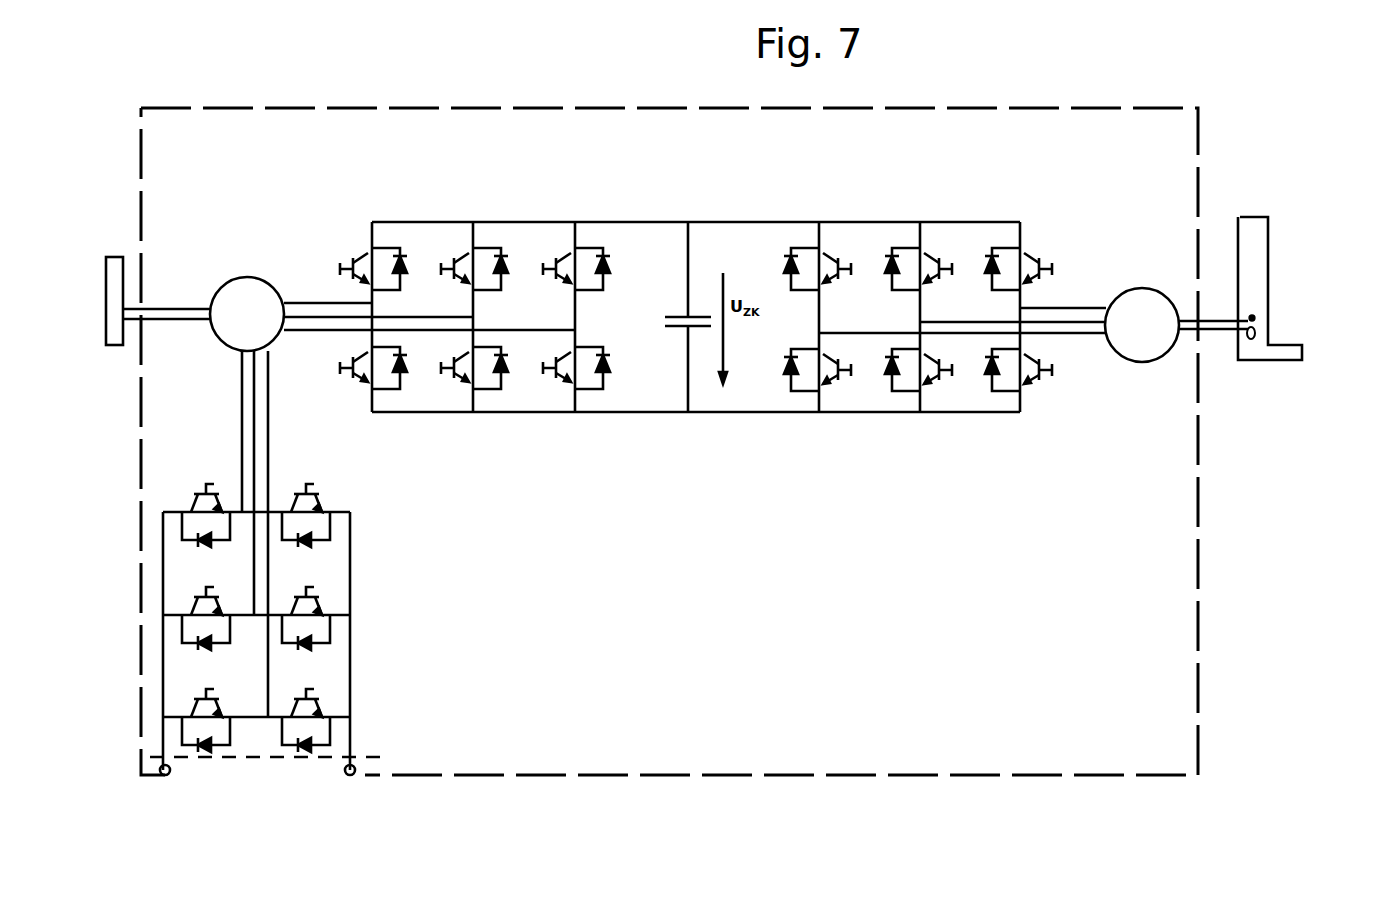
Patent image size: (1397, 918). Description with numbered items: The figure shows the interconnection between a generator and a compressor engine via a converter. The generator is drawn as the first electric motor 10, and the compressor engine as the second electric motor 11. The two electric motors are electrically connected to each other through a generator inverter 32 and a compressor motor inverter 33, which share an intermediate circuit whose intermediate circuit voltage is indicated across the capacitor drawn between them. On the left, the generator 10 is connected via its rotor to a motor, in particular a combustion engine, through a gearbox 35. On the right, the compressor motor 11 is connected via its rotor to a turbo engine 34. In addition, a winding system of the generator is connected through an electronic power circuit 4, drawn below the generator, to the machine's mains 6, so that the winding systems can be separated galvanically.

The electronic power circuit 4 is at (322, 662).
The machine's mains 6 is at (265, 809).
The first electric motor 10 is at (240, 330).
The second electric motor 11 is at (1137, 335).
The generator inverter 32 is at (523, 373).
The compressor motor inverter 33 is at (863, 378).
The turbo engine 34 is at (1253, 245).
The gearbox 35 is at (118, 275).